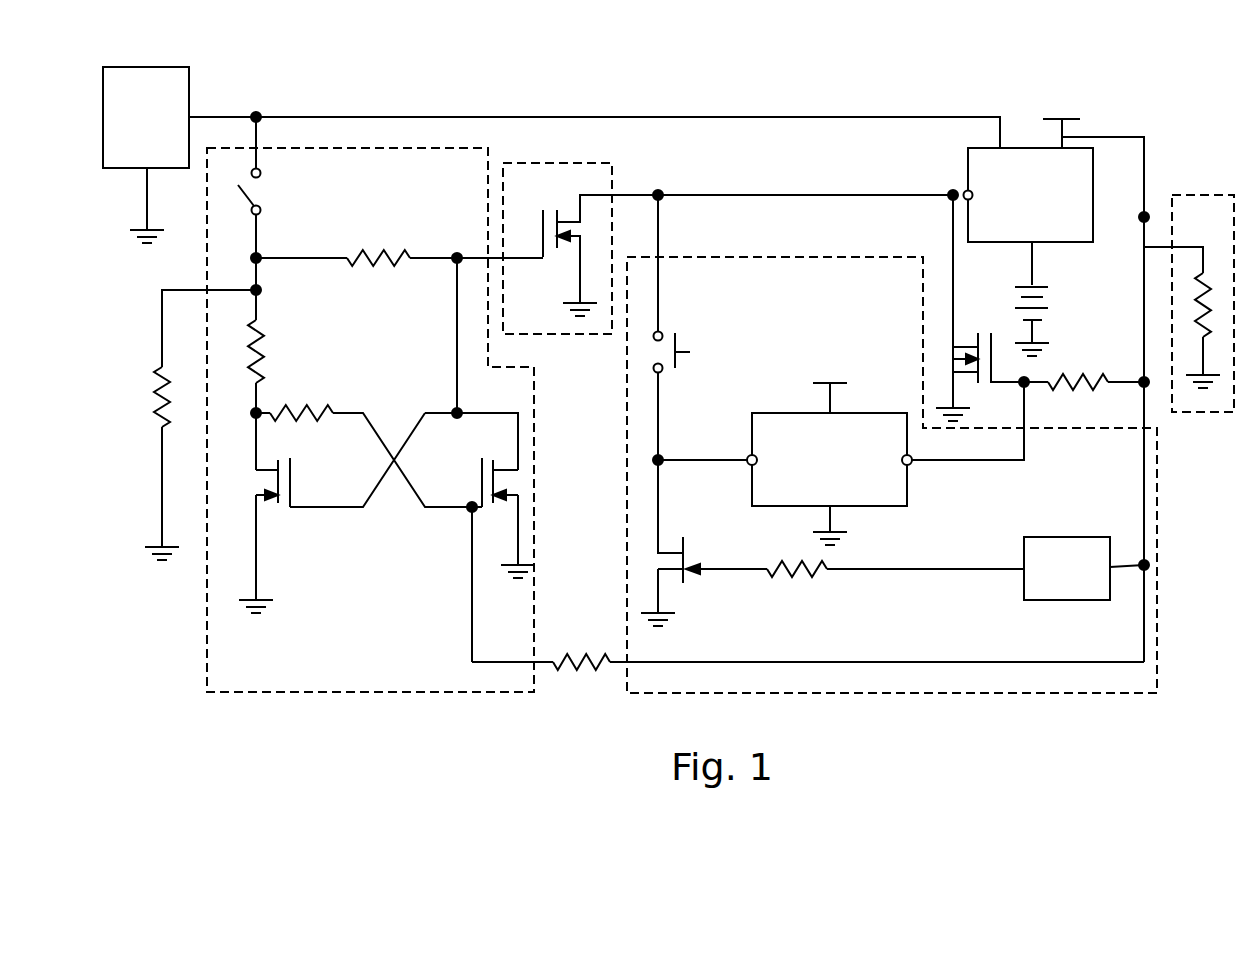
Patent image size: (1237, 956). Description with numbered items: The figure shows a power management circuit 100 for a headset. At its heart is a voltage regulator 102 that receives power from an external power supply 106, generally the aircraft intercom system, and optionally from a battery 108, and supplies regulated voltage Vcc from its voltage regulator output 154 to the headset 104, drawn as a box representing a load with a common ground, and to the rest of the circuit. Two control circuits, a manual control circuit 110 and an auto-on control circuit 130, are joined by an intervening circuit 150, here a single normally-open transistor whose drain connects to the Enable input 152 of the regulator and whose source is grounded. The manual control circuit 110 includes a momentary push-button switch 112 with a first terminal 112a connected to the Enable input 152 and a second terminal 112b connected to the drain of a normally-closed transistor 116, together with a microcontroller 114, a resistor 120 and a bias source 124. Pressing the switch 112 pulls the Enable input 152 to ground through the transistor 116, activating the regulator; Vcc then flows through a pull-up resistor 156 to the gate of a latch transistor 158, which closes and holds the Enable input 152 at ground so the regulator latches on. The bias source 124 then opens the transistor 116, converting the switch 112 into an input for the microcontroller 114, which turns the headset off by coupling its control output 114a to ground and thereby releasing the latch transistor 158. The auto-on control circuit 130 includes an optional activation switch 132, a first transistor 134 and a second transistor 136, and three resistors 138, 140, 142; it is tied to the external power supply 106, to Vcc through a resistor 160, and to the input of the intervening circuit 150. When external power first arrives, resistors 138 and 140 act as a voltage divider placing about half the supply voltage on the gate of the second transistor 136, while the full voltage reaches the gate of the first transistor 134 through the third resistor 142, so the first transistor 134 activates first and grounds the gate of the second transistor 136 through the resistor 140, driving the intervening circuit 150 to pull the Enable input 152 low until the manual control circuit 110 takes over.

The power management circuit 100 is at (752, 86).
The voltage regulator 102 is at (968, 167).
The headset 104 is at (1217, 195).
The external power supply 106 is at (148, 67).
The battery 108 is at (1080, 287).
The control circuit 110 is at (953, 693).
The momentary push-button switch 112 is at (716, 356).
The first terminal 112a is at (667, 332).
The second terminal 112b is at (662, 372).
The microcontroller 114 is at (891, 451).
The control output 114a is at (912, 463).
The transistor 116 is at (687, 553).
The resistor 120 is at (792, 578).
The bias source 124 is at (1068, 600).
The auto-on control circuit 130 is at (285, 693).
The activation switch 132 is at (260, 190).
The first transistor 134 is at (270, 497).
The second transistor 136 is at (480, 481).
The resistor 138 is at (266, 356).
The resistor 140 is at (297, 404).
The third resistor 142 is at (383, 252).
The intervening circuit 150 is at (612, 180).
The Enable input 152 is at (868, 198).
The voltage regulator output 154 is at (1120, 133).
The pull-up resistor 156 is at (1098, 373).
The latch transistor 158 is at (962, 333).
The resistor 160 is at (580, 668).